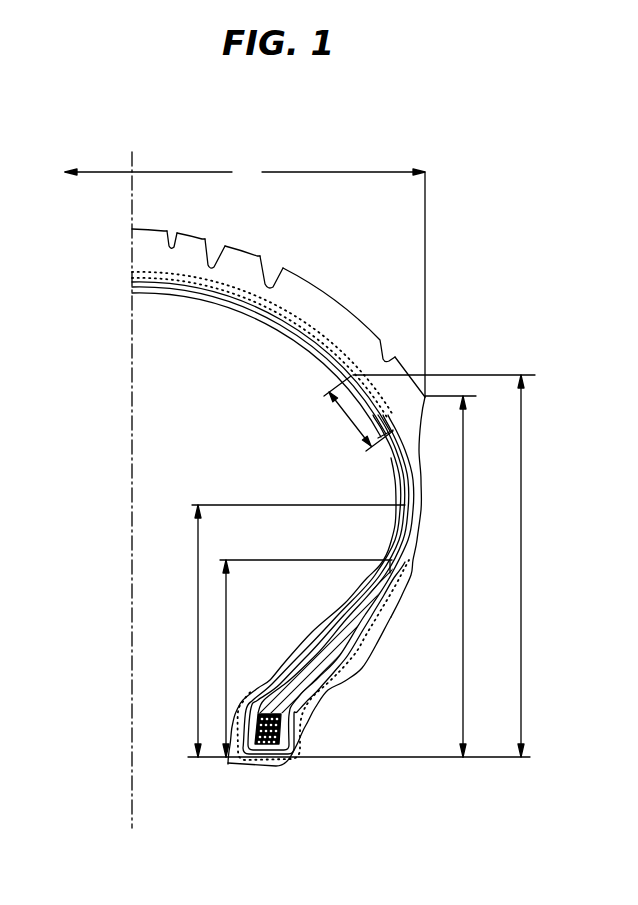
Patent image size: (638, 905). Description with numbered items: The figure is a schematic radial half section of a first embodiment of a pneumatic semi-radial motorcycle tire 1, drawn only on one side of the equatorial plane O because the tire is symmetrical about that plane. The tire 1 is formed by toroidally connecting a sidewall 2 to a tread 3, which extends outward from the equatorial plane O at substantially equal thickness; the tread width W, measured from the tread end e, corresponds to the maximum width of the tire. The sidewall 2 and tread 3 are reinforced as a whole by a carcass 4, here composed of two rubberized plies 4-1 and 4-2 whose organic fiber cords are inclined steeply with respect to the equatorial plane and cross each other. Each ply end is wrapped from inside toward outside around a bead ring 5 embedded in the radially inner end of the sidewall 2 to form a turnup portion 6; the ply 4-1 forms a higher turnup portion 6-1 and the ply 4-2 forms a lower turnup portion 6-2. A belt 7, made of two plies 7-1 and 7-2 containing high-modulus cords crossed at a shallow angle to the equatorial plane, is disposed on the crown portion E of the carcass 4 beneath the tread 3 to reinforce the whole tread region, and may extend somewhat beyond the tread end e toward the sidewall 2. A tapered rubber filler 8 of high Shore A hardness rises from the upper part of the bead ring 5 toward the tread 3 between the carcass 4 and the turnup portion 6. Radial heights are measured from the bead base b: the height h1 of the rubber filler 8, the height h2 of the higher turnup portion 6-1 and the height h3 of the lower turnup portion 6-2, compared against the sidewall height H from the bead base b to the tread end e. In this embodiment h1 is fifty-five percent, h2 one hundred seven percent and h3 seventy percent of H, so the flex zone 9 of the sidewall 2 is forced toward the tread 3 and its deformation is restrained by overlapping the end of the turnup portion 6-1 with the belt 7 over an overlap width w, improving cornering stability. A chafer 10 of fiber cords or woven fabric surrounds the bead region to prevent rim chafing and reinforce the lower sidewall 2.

The tire 1 is at (427, 456).
The sidewall 2 is at (393, 610).
The tread 3 is at (320, 285).
The carcass 4 is at (297, 343).
The first carcass ply 4-1 is at (214, 303).
The second carcass ply 4-2 is at (260, 317).
The bead ring 5 is at (262, 733).
The turnup portion 6 is at (407, 563).
The higher turnup portion 6-1 is at (415, 490).
The lower turnup portion 6-2 is at (408, 523).
The belt 7 is at (173, 278).
The first belt ply 7-1 is at (193, 283).
The second belt ply 7-2 is at (232, 288).
The rubber filler 8 is at (333, 643).
The flex zone 9 is at (392, 478).
The chafer 10 is at (338, 673).
The crown portion E is at (163, 296).
The tread end e is at (426, 396).
The bead base b is at (285, 764).
The overlap width w is at (358, 413).
The tread width W is at (245, 279).
The sidewall height H is at (450, 576).
The rubber filler height h1 is at (304, 658).
The higher turnup portion height h2 is at (362, 566).
The lower turnup portion height h3 is at (294, 631).
The equatorial plane O is at (129, 494).